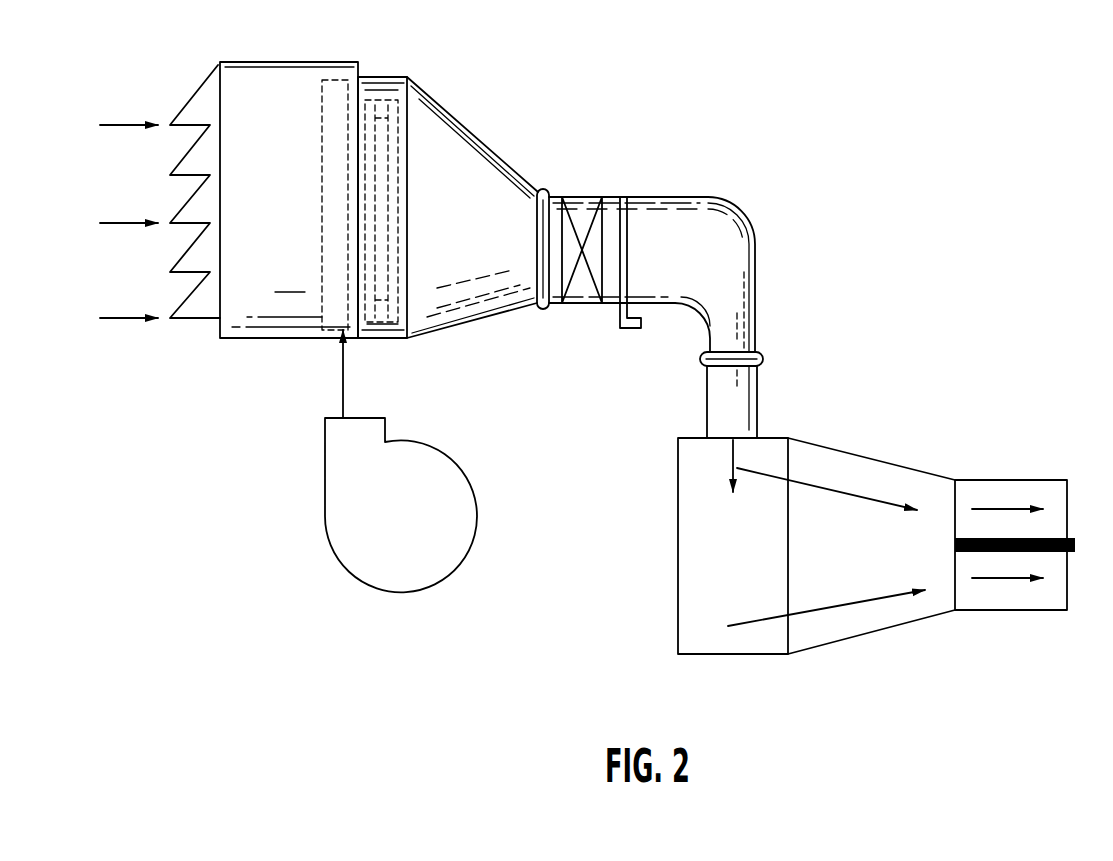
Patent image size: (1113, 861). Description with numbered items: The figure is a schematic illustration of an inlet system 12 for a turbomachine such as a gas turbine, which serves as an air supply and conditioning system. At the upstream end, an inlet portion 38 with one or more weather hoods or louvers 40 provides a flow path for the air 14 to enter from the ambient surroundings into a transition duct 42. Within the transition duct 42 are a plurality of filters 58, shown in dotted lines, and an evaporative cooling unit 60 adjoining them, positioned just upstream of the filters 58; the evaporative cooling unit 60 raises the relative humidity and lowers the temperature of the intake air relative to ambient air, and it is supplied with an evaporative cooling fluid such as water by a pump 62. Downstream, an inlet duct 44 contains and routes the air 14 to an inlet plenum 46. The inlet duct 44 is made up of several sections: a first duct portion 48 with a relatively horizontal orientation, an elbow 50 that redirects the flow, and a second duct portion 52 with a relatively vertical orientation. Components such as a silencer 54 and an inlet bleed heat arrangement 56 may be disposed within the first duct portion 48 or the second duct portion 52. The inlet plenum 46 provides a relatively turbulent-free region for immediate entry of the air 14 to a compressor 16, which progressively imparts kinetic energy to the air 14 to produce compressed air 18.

The inlet system 12 is at (605, 65).
The air 14 is at (117, 125).
The compressor 16 is at (885, 458).
The compressed air 18 is at (833, 492).
The inlet portion 38 is at (214, 331).
The weather hoods or louvers 40 is at (198, 110).
The transition duct 42 is at (392, 100).
The inlet duct 44 is at (488, 187).
The inlet plenum 46 is at (700, 503).
The first duct portion 48 is at (612, 193).
The elbow 50 is at (723, 262).
The second duct portion 52 is at (747, 412).
The silencer 54 is at (583, 287).
The inlet bleed heat arrangement 56 is at (625, 248).
The filters 58 is at (405, 183).
The evaporative cooling unit 60 is at (333, 65).
The pump 62 is at (345, 509).